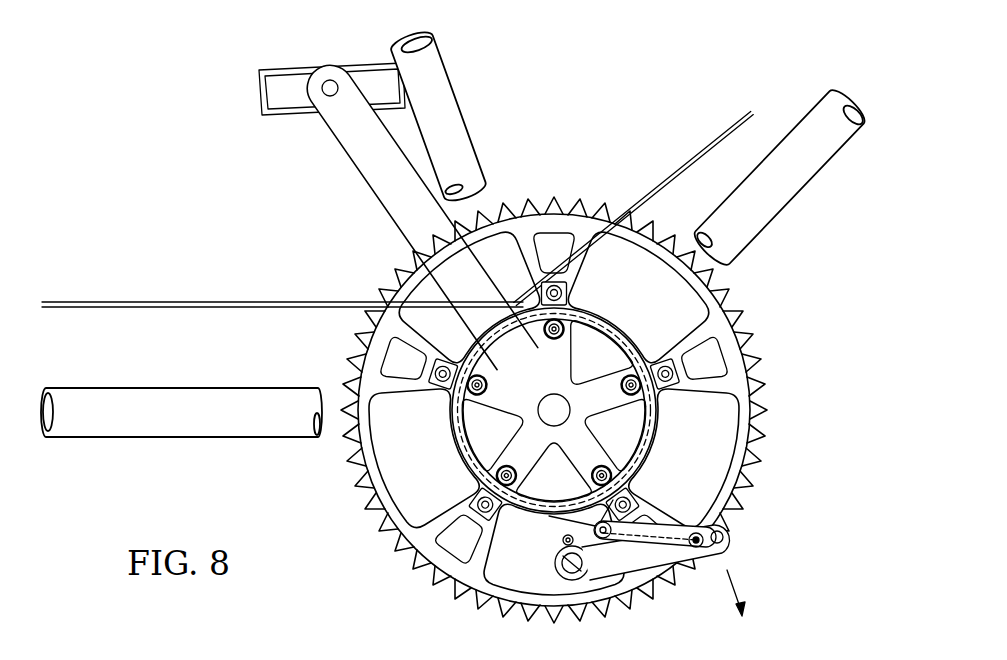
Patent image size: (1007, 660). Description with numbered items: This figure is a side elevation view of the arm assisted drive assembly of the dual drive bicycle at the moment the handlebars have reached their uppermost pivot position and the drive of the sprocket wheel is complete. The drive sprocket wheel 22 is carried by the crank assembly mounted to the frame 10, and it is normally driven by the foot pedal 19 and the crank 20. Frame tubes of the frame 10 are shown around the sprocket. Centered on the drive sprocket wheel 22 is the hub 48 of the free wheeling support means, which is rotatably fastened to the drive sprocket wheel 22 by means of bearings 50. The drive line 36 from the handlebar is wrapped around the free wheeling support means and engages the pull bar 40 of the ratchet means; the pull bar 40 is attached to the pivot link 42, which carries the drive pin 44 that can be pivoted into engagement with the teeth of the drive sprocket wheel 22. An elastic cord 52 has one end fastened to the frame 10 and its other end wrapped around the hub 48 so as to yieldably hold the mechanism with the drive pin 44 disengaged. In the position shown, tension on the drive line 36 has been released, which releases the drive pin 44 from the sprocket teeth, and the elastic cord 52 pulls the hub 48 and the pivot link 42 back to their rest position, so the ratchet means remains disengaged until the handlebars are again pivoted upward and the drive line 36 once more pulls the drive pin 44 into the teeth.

The frame 10 is at (457, 103).
The foot pedal 19 is at (287, 71).
The crank 20 is at (348, 142).
The drive sprocket wheel 22 is at (390, 268).
The drive line 36 is at (703, 148).
The pull bar 40 is at (632, 516).
The pivot link 42 is at (642, 580).
The drive pin 44 is at (729, 544).
The hub 48 is at (448, 435).
The bearings 50 is at (554, 404).
The elastic cord 52 is at (282, 282).